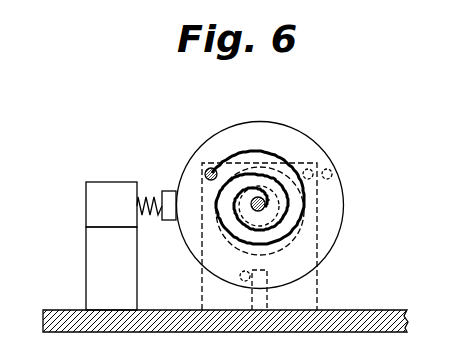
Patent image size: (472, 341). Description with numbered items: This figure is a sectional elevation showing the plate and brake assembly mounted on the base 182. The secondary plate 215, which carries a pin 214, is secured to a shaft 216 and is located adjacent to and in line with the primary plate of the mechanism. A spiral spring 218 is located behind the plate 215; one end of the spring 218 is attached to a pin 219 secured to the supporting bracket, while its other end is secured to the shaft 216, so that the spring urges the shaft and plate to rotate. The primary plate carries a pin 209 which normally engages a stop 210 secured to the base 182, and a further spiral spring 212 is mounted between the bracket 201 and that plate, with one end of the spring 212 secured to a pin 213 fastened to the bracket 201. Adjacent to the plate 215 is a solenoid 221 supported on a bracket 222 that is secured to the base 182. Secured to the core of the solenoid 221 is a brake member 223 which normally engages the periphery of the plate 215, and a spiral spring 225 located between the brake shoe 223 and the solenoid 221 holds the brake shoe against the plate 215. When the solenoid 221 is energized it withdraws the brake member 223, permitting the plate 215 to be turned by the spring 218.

The base 182 is at (55, 310).
The bracket 201 is at (202, 297).
The pin 209 is at (240, 277).
The stop 210 is at (267, 300).
The spiral spring 212 is at (300, 240).
The pin 213 is at (312, 171).
The pin 214 is at (332, 174).
The secondary plate 215 is at (293, 128).
The shaft 216 is at (265, 204).
The spiral spring 218 is at (273, 155).
The pin 219 is at (210, 168).
The solenoid 221 is at (102, 188).
The bracket 222 is at (95, 245).
The brake member 223 is at (172, 194).
The spiral spring 225 is at (152, 217).